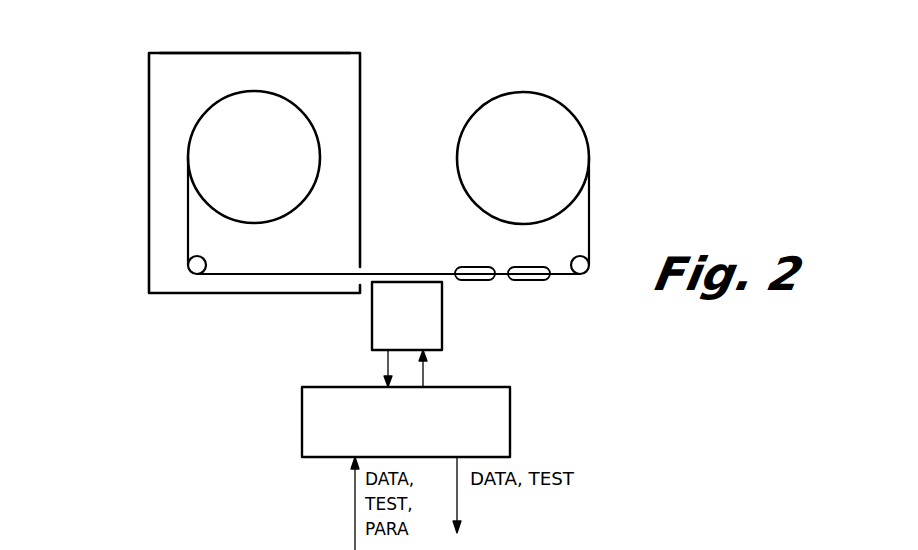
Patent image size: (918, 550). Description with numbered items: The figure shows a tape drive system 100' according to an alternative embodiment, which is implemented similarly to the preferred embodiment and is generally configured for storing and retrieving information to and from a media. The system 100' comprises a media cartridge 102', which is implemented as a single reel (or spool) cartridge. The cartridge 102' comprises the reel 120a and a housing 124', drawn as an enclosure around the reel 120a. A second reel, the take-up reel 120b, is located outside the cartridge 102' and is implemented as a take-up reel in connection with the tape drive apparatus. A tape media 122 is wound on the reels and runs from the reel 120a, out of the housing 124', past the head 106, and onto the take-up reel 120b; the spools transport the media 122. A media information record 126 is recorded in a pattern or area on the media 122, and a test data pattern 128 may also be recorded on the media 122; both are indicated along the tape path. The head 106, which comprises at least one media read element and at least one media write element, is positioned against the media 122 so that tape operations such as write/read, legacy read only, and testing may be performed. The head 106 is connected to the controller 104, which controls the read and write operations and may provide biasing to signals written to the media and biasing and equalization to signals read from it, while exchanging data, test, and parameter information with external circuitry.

The tape drive system 100' is at (321, 194).
The media cartridge 102' is at (206, 173).
The housing 124' is at (255, 74).
The reel 120a is at (320, 158).
The take-up reel 120b is at (480, 203).
The media 122 is at (260, 273).
The media information record 126 is at (472, 281).
The test data pattern 128 is at (525, 281).
The head 106 is at (372, 313).
The controller 104 is at (302, 413).